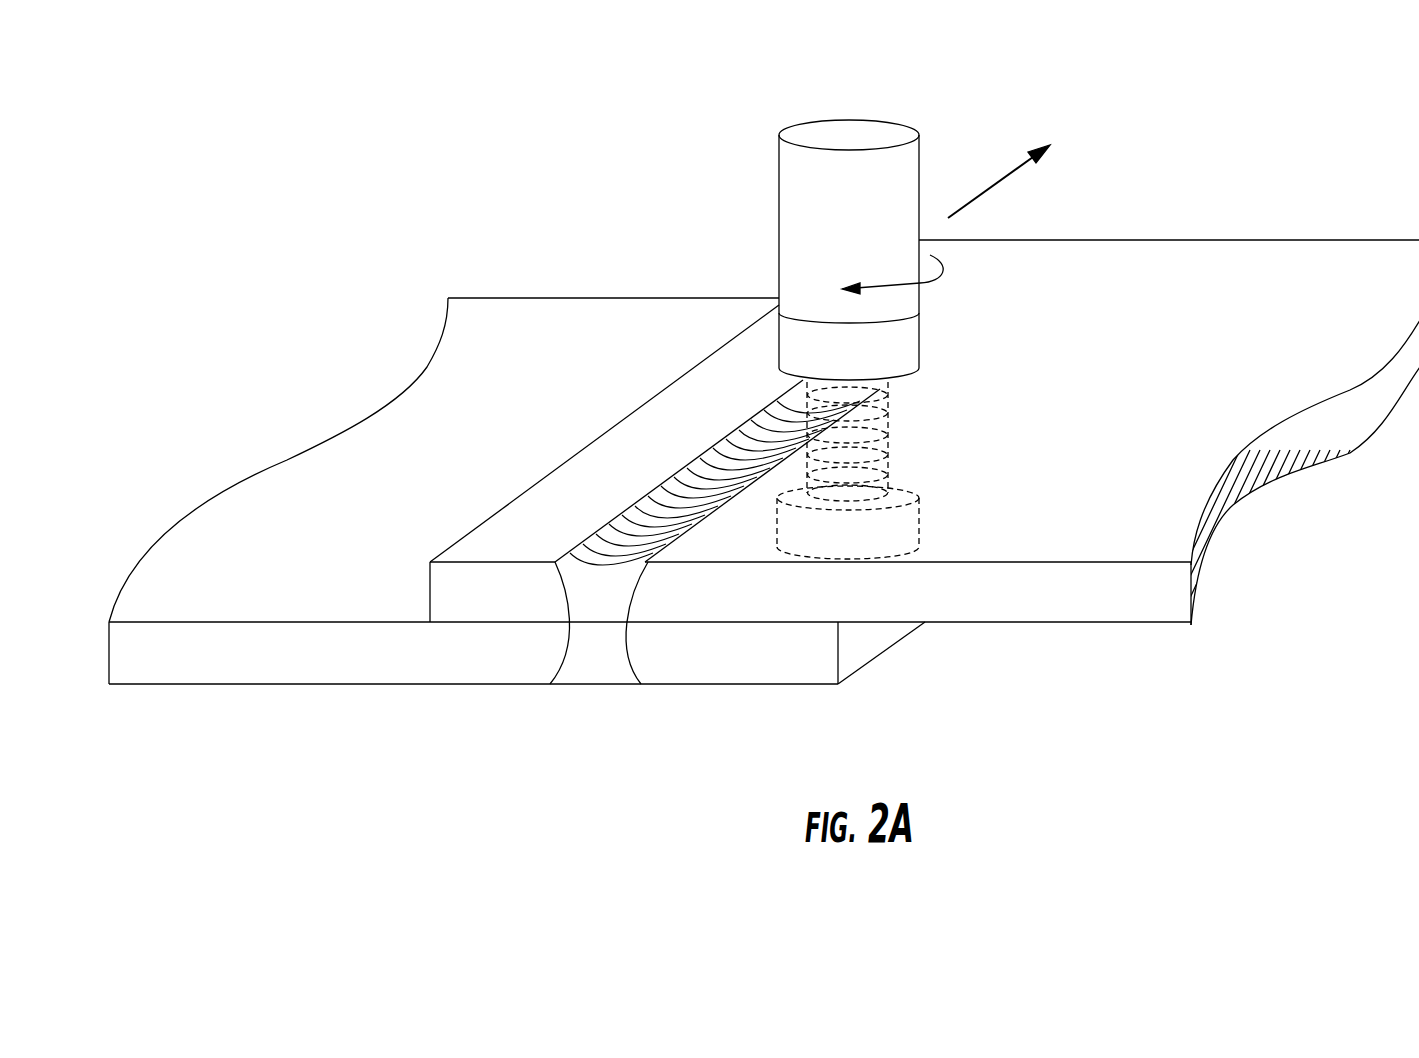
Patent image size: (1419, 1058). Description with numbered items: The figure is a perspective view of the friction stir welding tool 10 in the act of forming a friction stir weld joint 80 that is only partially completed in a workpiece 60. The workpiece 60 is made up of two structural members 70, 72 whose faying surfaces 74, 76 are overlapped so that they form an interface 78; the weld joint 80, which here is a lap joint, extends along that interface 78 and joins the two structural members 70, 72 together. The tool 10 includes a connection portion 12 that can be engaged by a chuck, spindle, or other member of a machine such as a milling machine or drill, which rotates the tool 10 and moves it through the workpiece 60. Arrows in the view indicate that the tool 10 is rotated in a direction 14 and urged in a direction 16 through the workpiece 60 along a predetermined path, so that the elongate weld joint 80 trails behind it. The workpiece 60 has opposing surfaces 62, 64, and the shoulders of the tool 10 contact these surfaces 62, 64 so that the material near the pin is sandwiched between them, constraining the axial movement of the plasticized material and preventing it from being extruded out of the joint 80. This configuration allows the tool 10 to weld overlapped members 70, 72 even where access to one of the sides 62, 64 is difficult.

The friction stir welding tool 10 is at (818, 295).
The connection portion 12 is at (779, 220).
The direction of rotation 14 is at (927, 280).
The direction of travel 16 is at (997, 183).
The workpiece 60 is at (603, 222).
The first surface of the workpiece 62 is at (1156, 263).
The second surface of the workpiece 64 is at (518, 686).
The first structural member 70 is at (1032, 612).
The second structural member 72 is at (193, 663).
The faying surface of the first structural member 74 is at (738, 625).
The faying surface of the second structural member 76 is at (499, 618).
The interface 78 is at (425, 619).
The friction stir weld joint 80 is at (677, 535).